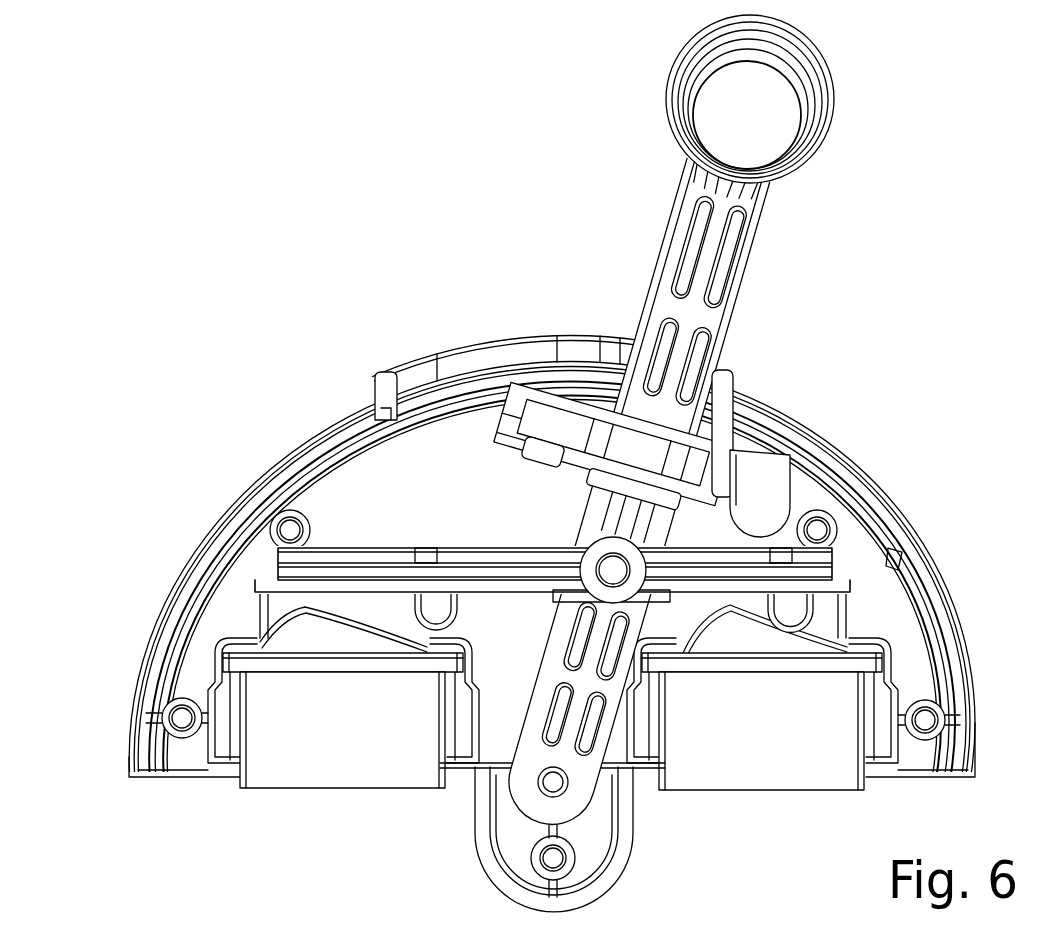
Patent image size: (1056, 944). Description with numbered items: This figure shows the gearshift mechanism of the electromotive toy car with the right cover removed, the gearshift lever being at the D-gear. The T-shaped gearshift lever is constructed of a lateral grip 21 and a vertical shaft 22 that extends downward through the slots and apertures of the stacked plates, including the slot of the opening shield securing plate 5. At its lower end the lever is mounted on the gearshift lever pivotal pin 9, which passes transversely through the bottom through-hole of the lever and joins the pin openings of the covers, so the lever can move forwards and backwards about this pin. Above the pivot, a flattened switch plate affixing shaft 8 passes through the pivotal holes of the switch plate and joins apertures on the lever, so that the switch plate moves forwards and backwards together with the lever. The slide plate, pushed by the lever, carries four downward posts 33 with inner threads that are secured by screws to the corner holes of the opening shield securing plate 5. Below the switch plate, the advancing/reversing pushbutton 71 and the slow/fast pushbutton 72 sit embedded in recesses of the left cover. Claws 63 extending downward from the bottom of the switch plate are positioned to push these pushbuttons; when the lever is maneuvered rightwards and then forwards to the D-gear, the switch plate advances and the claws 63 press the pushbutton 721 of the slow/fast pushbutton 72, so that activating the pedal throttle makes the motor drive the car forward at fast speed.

The lateral grip 21 is at (763, 118).
The vertical shaft 22 is at (660, 295).
The posts 33 is at (525, 407).
The switch plate affixing shaft 8 is at (618, 566).
The opening shield securing plate 5 is at (555, 455).
The claws 63 is at (790, 605).
The pushbutton 721 is at (723, 637).
The advancing/reversing pushbutton 71 is at (345, 739).
The slow/fast pushbutton 72 is at (772, 743).
The gearshift lever pivotal pin 9 is at (563, 785).